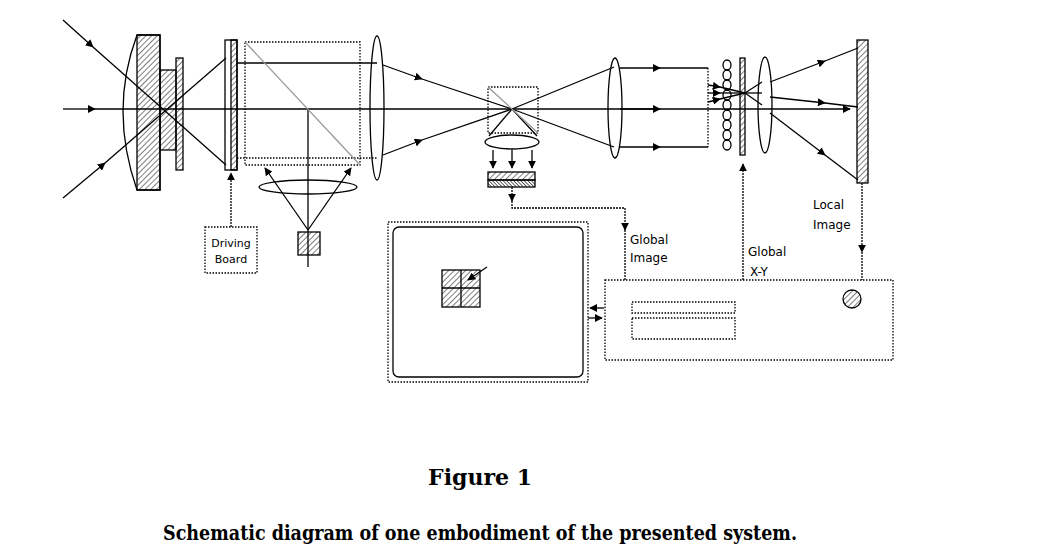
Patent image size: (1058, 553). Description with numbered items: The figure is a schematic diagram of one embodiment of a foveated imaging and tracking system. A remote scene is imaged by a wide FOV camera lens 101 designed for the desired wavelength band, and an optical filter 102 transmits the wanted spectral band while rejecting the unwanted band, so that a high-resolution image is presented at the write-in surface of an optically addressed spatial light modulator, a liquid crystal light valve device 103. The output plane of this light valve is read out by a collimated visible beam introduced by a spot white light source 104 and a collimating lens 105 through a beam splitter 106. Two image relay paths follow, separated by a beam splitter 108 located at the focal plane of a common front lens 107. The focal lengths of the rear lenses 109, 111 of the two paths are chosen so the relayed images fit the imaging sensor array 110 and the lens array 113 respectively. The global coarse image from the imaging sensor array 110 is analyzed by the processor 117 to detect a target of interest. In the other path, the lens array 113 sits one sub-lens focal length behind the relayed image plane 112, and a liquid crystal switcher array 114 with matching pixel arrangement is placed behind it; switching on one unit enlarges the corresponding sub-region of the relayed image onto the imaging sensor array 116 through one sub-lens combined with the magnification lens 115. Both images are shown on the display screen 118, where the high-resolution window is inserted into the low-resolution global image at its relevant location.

The wide FOV camera lens 101 is at (126, 173).
The optical filter 102 is at (178, 167).
The liquid crystal light valve device 103 is at (226, 168).
The spot white light source 104 is at (321, 254).
The collimating lens 105 is at (325, 189).
The beam splitter 106 is at (302, 52).
The common front lens 107 is at (383, 53).
The beam splitter 108 is at (513, 86).
The rear lens 109 is at (482, 143).
The imaging sensor array 110 is at (486, 181).
The rear lens 111 is at (614, 72).
The relayed image plane 112 is at (704, 84).
The lens array 113 is at (722, 62).
The liquid crystal switcher array 114 is at (743, 62).
The magnification lens 115 is at (770, 70).
The imaging sensor array 116 is at (866, 53).
The processor 117 is at (756, 339).
The display screen 118 is at (571, 352).